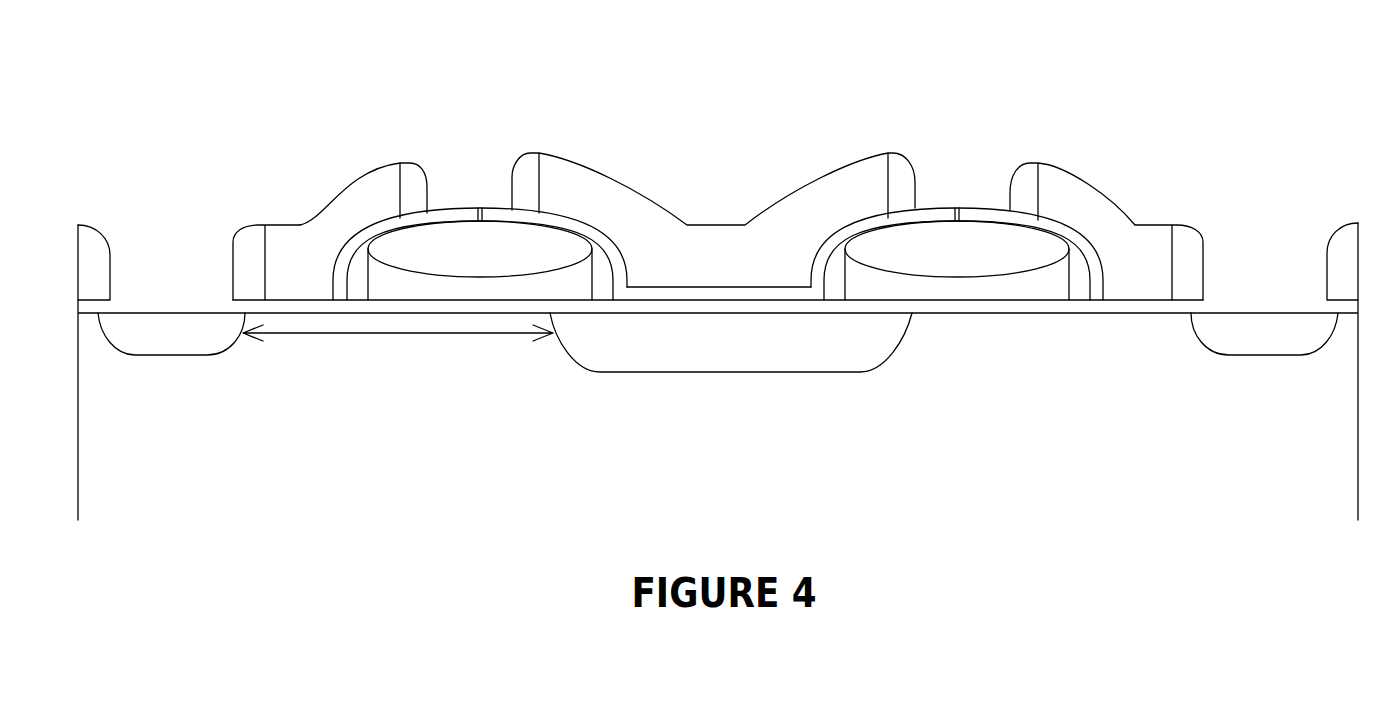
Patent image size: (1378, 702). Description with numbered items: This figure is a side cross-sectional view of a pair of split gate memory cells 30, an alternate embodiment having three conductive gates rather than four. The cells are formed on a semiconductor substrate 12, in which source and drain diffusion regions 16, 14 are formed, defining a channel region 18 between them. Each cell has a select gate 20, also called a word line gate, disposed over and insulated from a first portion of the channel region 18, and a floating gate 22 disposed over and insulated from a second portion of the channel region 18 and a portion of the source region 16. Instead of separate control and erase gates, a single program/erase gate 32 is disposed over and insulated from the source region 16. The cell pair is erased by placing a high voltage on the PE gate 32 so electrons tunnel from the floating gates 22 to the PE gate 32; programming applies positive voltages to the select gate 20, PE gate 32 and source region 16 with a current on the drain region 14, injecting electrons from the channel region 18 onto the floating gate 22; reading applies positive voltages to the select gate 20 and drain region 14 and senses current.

The semiconductor substrate 12 is at (110, 439).
The drain region 14 is at (188, 347).
The source region 16 is at (703, 352).
The channel region 18 is at (418, 333).
The select gate 20 is at (340, 218).
The floating gate 22 is at (478, 292).
The split gate memory cell 30 is at (605, 108).
The program/erase (PE) gate 32 is at (698, 275).